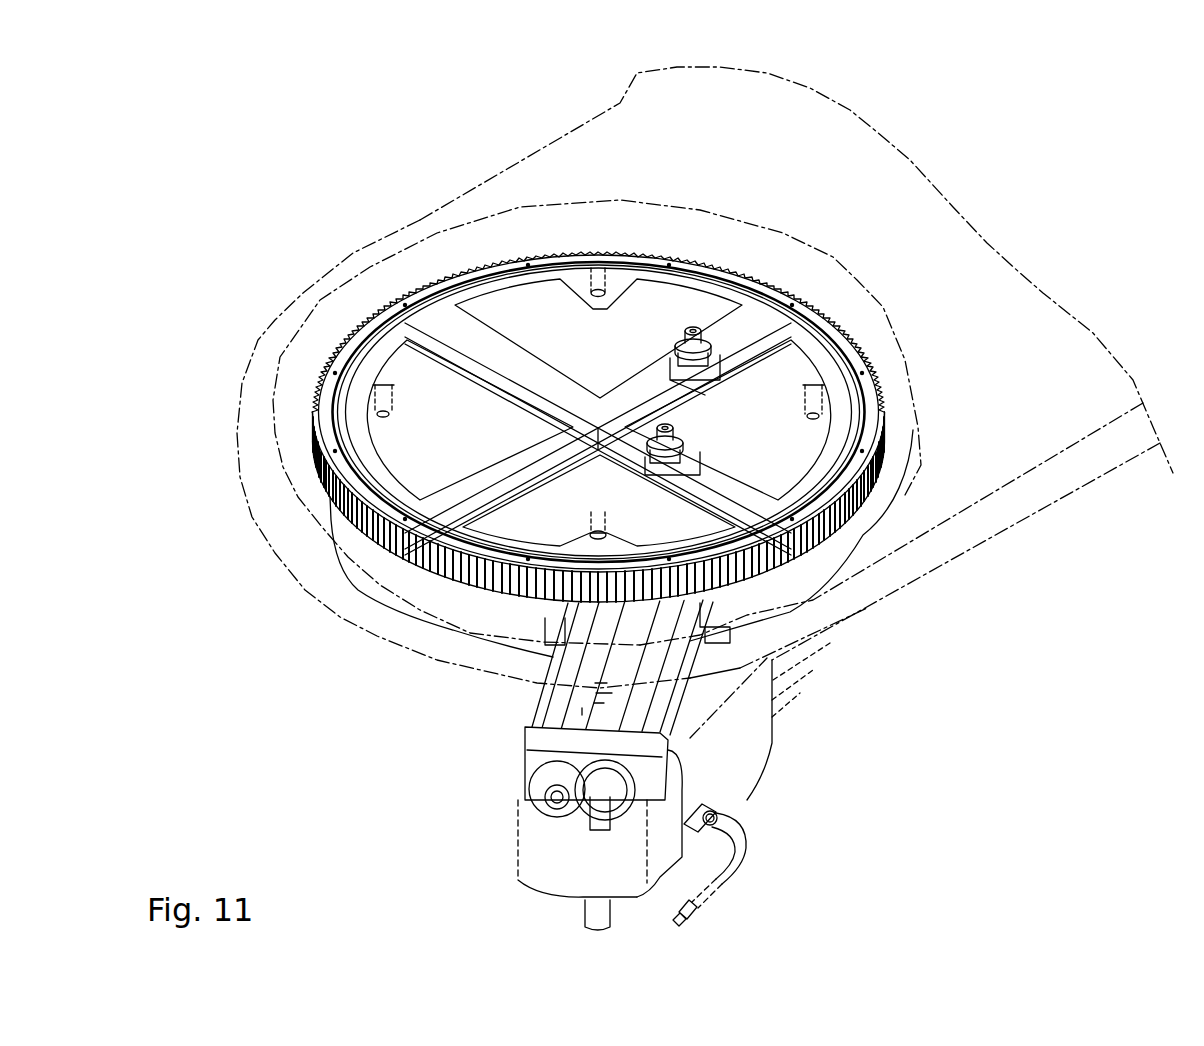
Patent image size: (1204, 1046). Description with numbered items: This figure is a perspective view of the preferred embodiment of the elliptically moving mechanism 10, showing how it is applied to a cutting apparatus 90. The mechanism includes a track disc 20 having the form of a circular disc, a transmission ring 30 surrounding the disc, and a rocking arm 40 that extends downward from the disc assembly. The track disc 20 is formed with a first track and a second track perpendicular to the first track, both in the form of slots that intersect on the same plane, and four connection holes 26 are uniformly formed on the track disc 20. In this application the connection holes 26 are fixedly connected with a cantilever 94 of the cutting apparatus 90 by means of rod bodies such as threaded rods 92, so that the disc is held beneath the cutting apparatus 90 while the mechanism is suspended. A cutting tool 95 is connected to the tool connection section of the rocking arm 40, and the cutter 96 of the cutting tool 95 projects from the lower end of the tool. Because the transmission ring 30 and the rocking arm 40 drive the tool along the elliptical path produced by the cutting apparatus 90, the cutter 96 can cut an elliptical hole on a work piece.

The rotary indexing table assembly 10 is at (330, 318).
The track disc 20 is at (588, 357).
The connection holes 26 is at (385, 420).
The transmission ring 30 is at (420, 577).
The rocking arm 40 is at (510, 735).
The cutting apparatus 90 is at (1097, 284).
The threaded rods 92 is at (388, 408).
The cantilever 94 is at (1013, 502).
The cutting tool 95 is at (737, 763).
The cutter 96 is at (583, 907).